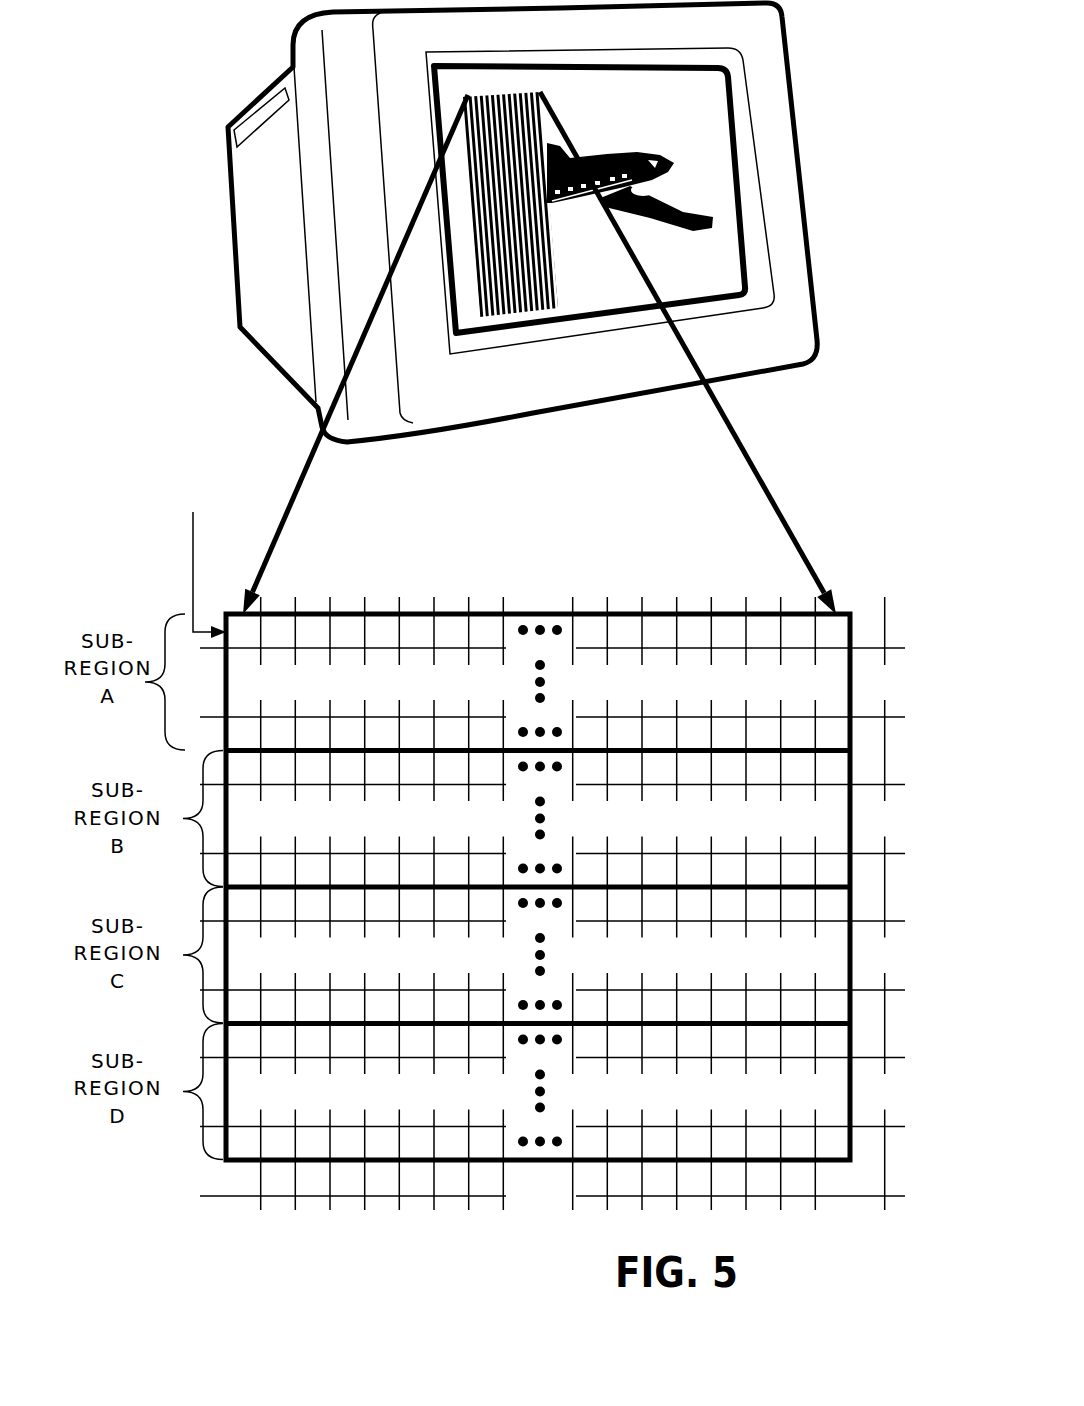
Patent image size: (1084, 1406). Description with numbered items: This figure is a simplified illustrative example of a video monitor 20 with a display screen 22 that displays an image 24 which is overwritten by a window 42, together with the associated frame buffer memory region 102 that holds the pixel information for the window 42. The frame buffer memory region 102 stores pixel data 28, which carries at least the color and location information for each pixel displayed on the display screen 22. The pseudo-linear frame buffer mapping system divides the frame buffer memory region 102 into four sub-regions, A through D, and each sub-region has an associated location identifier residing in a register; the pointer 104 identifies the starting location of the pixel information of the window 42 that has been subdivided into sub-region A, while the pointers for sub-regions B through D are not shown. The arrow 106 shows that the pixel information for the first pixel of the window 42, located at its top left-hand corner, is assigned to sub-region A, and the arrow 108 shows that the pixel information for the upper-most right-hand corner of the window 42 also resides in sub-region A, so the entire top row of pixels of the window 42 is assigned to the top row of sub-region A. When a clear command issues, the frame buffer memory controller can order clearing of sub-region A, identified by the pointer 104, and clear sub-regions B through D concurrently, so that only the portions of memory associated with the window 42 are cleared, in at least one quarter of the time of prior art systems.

The video monitor 20 is at (233, 274).
The display screen 22 is at (758, 243).
The image 24 is at (672, 163).
The window 42 is at (553, 263).
The pixel data 28 is at (552, 864).
The frame buffer memory region 102 is at (460, 955).
The pointer 104 is at (159, 531).
The arrow 106 is at (277, 547).
The arrow 108 is at (797, 540).